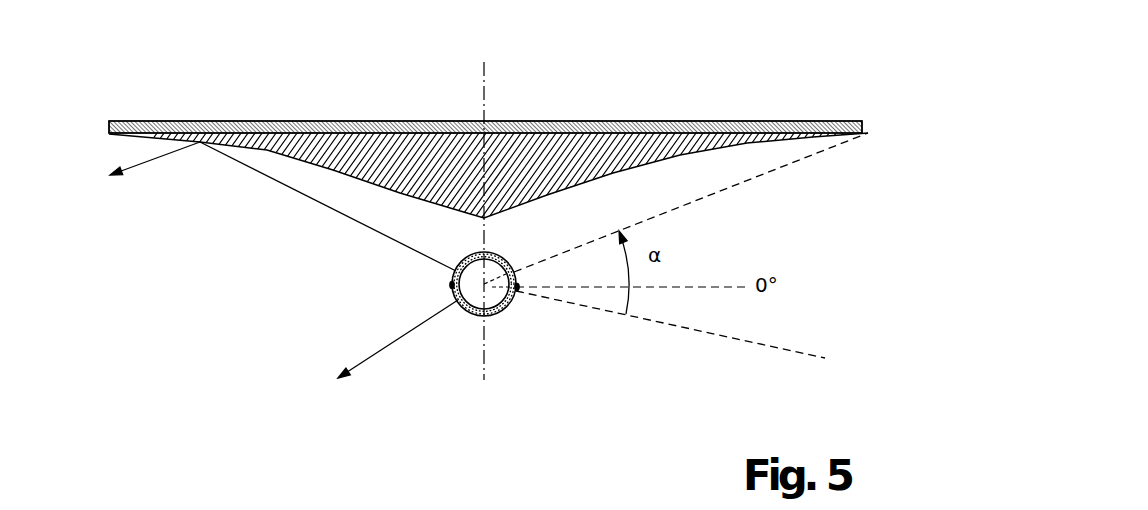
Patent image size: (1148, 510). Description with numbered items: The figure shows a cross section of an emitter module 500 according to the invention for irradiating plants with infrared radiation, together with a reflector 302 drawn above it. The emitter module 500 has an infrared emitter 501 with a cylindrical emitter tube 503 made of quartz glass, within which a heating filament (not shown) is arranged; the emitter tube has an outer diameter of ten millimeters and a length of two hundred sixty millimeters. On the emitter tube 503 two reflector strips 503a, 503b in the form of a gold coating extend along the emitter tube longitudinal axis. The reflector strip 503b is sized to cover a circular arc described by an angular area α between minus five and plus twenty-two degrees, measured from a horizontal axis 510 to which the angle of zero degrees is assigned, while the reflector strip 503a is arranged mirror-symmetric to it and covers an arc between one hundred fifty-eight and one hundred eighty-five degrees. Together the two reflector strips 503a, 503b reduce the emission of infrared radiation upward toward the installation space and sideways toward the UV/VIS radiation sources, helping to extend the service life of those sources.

The reflector 302 is at (268, 120).
The emitter module 500 is at (760, 79).
The infrared emitter 501 is at (506, 323).
The emitter tube 503 is at (465, 312).
The reflector strip 503a is at (452, 287).
The reflector strip 503b is at (518, 290).
The horizontal axis 510 is at (720, 288).